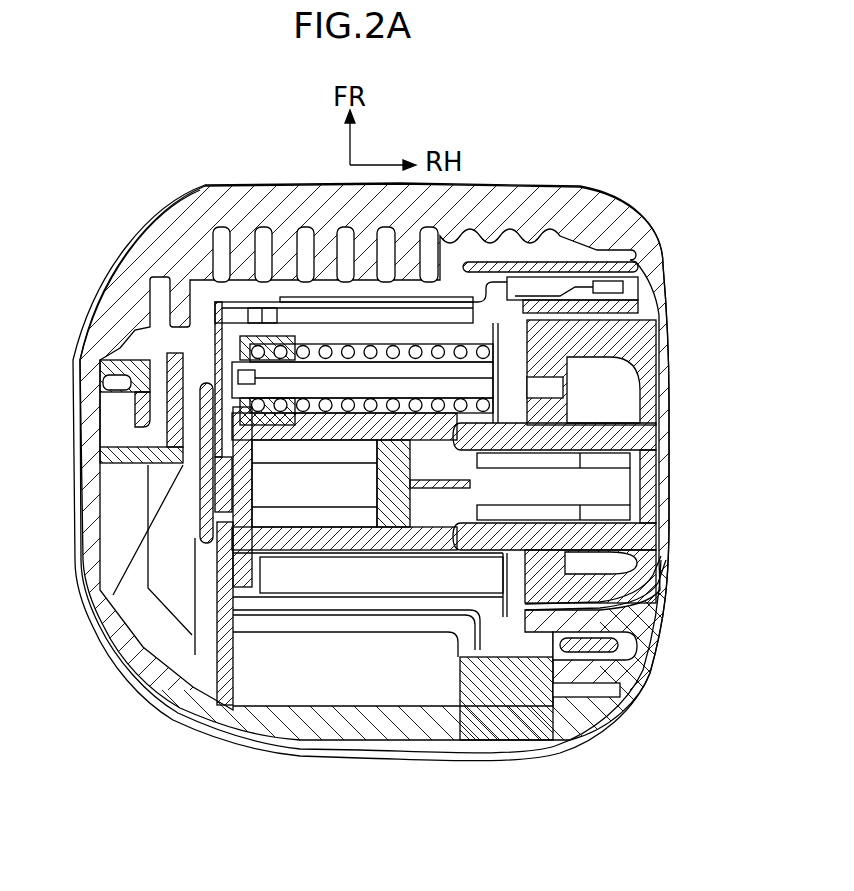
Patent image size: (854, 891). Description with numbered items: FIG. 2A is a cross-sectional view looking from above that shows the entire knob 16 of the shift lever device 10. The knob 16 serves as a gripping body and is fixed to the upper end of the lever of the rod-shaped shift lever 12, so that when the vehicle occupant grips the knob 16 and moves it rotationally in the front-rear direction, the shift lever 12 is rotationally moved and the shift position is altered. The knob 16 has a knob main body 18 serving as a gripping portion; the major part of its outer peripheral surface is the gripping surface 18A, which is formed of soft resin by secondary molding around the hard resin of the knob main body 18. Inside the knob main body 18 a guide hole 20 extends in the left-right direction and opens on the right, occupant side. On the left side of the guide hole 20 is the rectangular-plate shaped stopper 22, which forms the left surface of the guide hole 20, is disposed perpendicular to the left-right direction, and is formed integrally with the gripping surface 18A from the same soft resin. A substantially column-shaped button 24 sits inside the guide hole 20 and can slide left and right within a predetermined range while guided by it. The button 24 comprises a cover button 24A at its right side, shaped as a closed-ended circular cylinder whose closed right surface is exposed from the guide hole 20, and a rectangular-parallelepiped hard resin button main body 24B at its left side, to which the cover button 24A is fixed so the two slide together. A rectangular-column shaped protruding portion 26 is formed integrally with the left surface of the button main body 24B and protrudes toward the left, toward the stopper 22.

The shift lever device 10 is at (90, 192).
The shift lever 12 is at (577, 187).
The knob 16 is at (205, 186).
The knob main body 18 is at (150, 712).
The gripping surface 18A is at (500, 183).
The guide hole 20 is at (647, 315).
The stopper 22 is at (200, 483).
The button 24 is at (662, 347).
The cover button 24A is at (670, 558).
The button main body 24B is at (307, 553).
The protruding portion 26 is at (227, 520).